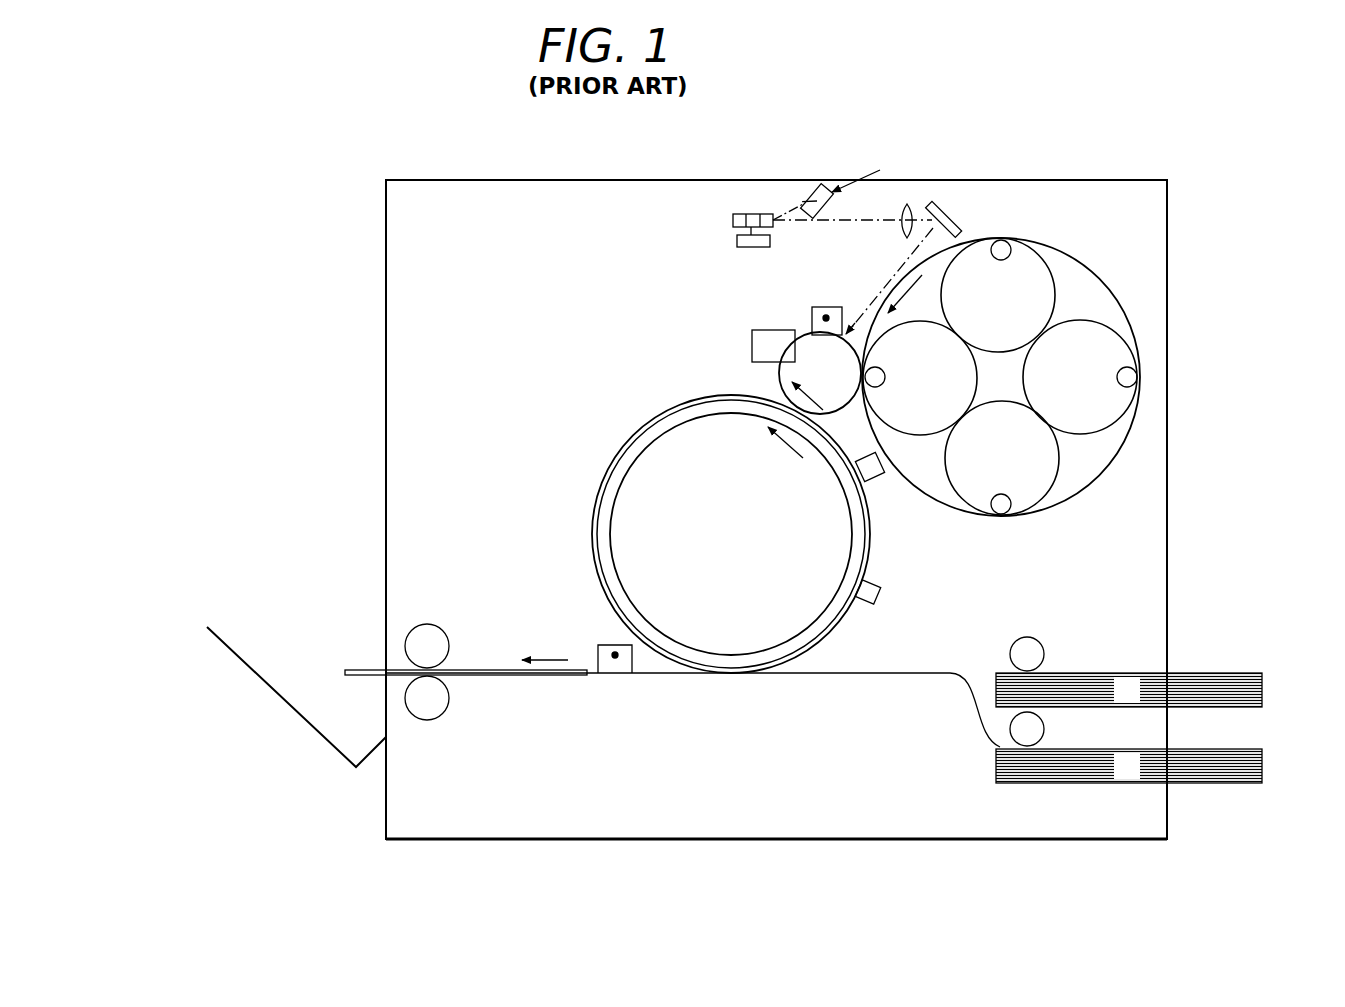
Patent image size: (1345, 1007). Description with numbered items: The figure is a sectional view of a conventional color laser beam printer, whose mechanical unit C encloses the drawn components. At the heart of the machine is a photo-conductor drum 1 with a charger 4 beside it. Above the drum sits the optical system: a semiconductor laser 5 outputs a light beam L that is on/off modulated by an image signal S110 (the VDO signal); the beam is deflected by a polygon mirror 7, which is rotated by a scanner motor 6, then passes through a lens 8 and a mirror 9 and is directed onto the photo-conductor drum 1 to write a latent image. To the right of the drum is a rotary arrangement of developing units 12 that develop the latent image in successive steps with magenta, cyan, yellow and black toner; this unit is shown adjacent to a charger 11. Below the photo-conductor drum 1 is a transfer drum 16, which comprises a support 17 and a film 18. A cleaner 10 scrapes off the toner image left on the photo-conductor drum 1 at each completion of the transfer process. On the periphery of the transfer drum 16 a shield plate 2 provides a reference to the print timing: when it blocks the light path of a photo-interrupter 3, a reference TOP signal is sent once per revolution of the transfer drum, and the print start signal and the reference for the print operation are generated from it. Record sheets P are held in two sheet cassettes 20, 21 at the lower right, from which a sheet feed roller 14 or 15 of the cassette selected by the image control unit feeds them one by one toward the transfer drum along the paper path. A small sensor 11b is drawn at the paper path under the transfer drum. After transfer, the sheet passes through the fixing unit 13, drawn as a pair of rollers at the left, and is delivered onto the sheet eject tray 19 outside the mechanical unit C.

The mechanical unit C is at (546, 180).
The photo-conductor drum 1 is at (779, 370).
The shield plate 2 is at (880, 592).
The photo-interrupter 3 is at (882, 478).
The charger 4 is at (812, 312).
The semiconductor laser 5 is at (810, 188).
The image signal S110 is at (878, 166).
The scanner motor 6 is at (737, 241).
The polygon mirror 7 is at (733, 219).
The lens 8 is at (904, 230).
The mirror 9 is at (954, 218).
The light beam L is at (840, 226).
The cleaner 10 is at (752, 338).
The charger 11 is at (1084, 266).
The sensor 11b is at (598, 662).
The developing units 12 is at (1118, 322).
The fixing unit 13 is at (445, 636).
The sheet feed roller 14 is at (1044, 645).
The sheet feed roller 15 is at (1044, 729).
The transfer drum 16 is at (679, 534).
The support 17 is at (598, 478).
The film 18 is at (534, 445).
The sheet eject tray 19 is at (296, 714).
The sheet cassette 20 is at (1263, 690).
The sheet cassette 21 is at (1263, 766).
The record sheets P is at (358, 670).